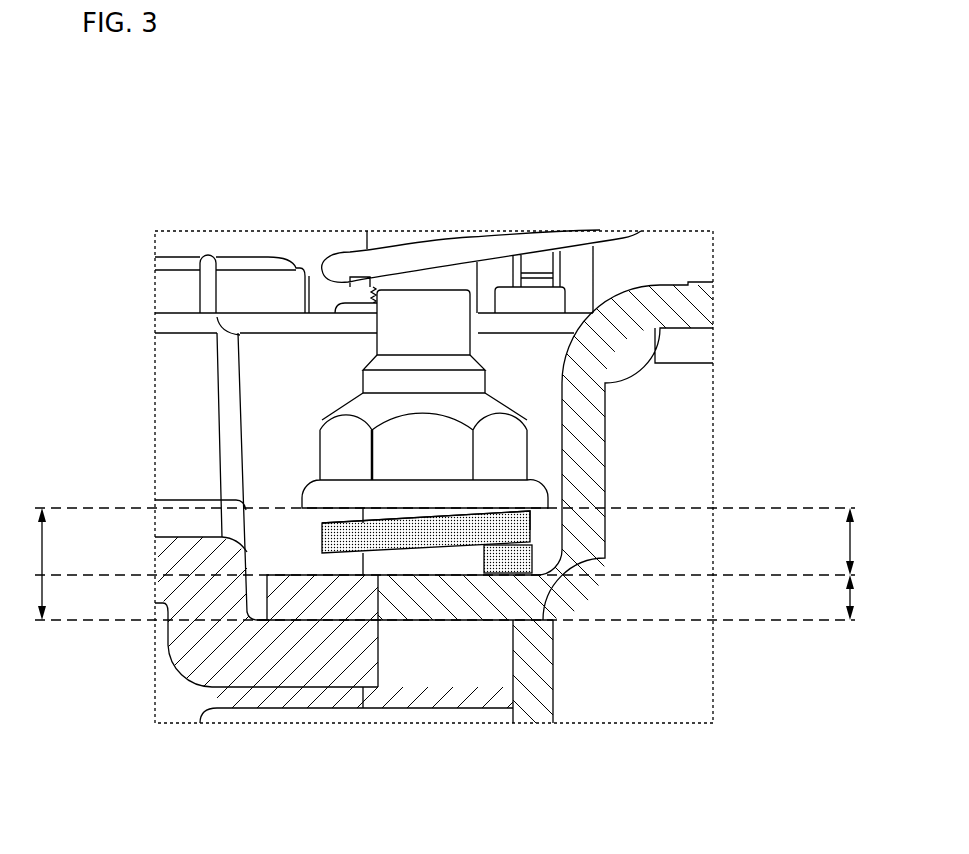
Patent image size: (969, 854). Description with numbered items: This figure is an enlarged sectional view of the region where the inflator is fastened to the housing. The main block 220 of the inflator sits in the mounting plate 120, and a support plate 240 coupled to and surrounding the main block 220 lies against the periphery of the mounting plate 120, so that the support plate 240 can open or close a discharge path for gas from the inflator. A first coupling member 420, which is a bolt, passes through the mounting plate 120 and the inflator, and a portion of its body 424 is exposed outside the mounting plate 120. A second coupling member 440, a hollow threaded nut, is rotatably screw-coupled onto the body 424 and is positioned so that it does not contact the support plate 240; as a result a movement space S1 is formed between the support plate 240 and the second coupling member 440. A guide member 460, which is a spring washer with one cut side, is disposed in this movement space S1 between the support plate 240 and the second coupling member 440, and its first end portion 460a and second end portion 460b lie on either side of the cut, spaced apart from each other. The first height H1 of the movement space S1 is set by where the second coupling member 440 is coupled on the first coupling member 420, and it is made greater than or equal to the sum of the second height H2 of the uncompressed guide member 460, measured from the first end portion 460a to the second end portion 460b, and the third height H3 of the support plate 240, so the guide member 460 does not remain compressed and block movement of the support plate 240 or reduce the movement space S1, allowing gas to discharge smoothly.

The first coupling member 420 is at (421, 336).
The body 424 is at (422, 328).
The second coupling member 440 is at (337, 450).
The guide member 460 is at (337, 532).
The first end portion 460a is at (518, 525).
The second end portion 460b is at (505, 558).
The main block 220 is at (537, 657).
The mounting plate 120 is at (233, 645).
The support plate 240 is at (297, 603).
The movement space S1 is at (433, 562).
The first height H1 is at (25, 564).
The second height H2 is at (869, 541).
The third height H3 is at (869, 597).